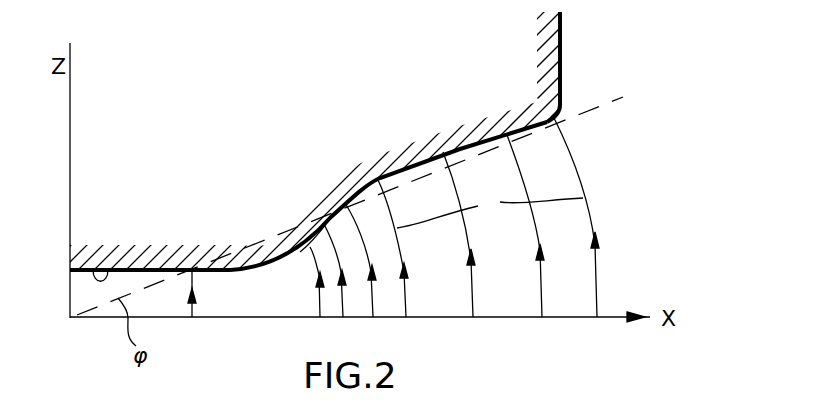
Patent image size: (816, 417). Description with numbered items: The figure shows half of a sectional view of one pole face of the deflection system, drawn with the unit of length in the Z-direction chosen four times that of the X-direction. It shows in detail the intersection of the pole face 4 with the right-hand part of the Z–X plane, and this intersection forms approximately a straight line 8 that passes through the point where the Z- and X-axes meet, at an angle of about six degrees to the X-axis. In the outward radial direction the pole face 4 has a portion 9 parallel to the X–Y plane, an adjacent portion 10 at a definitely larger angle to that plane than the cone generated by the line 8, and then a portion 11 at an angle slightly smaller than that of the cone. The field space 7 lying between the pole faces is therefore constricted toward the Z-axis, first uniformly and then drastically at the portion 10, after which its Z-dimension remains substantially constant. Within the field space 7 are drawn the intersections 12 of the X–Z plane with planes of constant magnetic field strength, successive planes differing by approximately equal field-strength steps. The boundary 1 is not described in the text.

The wall 1 is at (565, 30).
The pole face 4 is at (217, 265).
The field space 7 is at (448, 292).
The straight line 8 is at (590, 108).
The portion parallel to the X–Y plane 9 is at (116, 268).
The adjacent portion 10 is at (337, 216).
The portion at slightly smaller angle 11 is at (473, 143).
The intersections of planes of constant magnetic field strength 12 is at (490, 202).